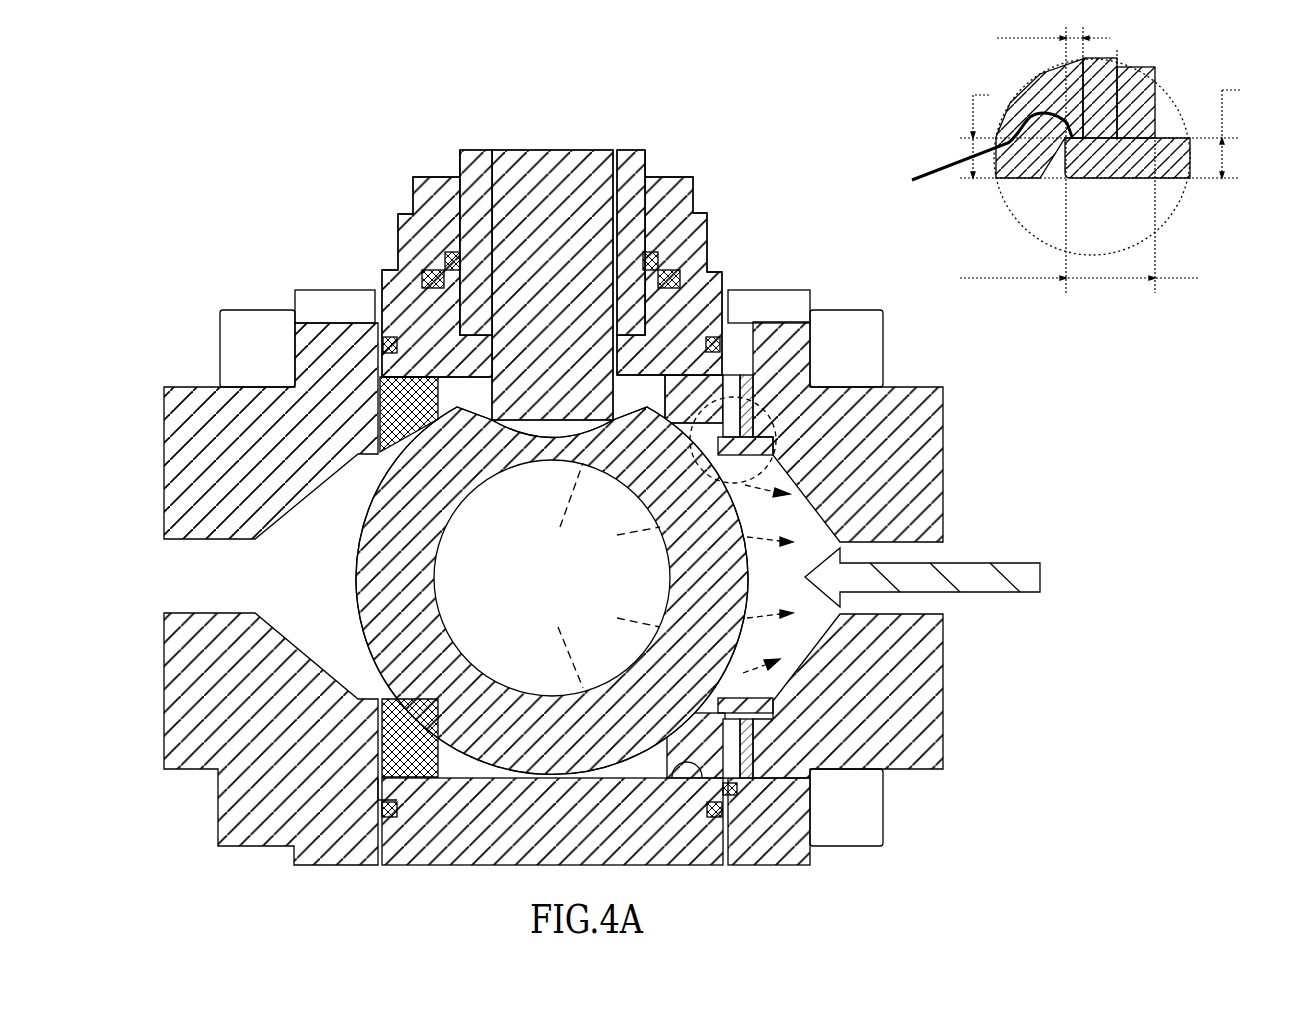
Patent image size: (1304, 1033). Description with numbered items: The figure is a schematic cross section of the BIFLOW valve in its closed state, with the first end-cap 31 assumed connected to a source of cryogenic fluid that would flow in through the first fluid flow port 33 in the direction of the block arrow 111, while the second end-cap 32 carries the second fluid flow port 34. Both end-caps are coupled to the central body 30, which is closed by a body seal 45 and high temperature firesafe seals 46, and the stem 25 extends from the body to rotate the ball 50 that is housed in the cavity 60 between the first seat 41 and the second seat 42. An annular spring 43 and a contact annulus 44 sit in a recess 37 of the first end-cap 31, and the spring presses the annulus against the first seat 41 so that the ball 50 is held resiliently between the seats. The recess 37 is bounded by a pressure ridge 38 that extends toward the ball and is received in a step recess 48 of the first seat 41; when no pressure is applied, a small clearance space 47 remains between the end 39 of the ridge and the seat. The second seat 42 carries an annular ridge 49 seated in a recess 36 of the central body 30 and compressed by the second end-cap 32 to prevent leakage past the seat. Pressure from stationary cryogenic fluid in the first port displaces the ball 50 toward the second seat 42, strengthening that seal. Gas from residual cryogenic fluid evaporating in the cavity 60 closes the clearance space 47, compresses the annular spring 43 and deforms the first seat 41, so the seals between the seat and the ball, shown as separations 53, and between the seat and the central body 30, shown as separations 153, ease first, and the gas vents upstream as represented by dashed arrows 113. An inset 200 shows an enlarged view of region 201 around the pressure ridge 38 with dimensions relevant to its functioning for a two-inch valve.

The stem 25 is at (561, 303).
The central body 30 is at (549, 225).
The first end-cap 31 is at (908, 486).
The second end-cap 32 is at (248, 470).
The first fluid flow port 33 is at (927, 553).
The second fluid flow port 34 is at (221, 583).
The recess 36 is at (393, 368).
The recess 37 is at (752, 437).
The pressure ridge 38 is at (740, 455).
The end of pressure ridge 39 is at (722, 395).
The first seat 41 is at (698, 403).
The second seat 42 is at (421, 416).
The annular spring 43 is at (752, 407).
The contact annulus 44 is at (737, 377).
The body seal 45 is at (733, 793).
The high temperature firesafe seal 46 is at (397, 813).
The clearance space 47 is at (723, 430).
The step recess 48 is at (974, 155).
The annular ridge 49 is at (393, 368).
The ball 50 is at (557, 740).
The separations 53 is at (593, 458).
The cavity 60 is at (476, 403).
The block arrow 111 is at (968, 568).
The dashed arrows 113 is at (648, 373).
The separations 153 is at (670, 378).
The inset 200 is at (878, 130).
The region 201 is at (773, 447).